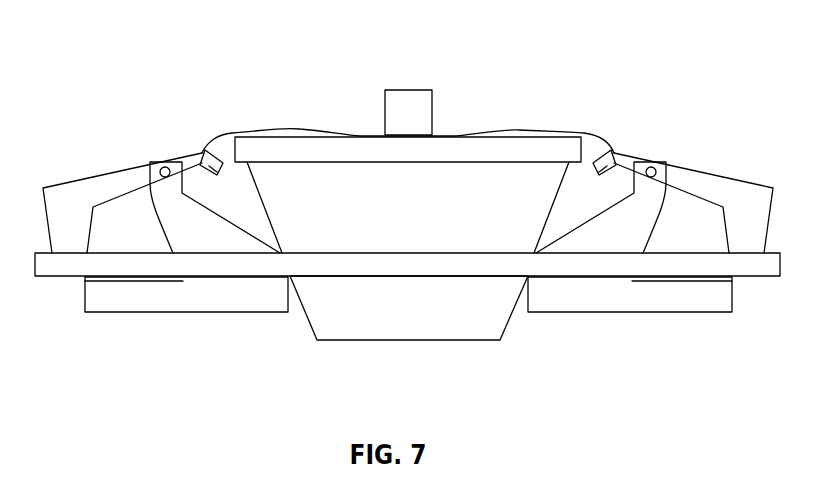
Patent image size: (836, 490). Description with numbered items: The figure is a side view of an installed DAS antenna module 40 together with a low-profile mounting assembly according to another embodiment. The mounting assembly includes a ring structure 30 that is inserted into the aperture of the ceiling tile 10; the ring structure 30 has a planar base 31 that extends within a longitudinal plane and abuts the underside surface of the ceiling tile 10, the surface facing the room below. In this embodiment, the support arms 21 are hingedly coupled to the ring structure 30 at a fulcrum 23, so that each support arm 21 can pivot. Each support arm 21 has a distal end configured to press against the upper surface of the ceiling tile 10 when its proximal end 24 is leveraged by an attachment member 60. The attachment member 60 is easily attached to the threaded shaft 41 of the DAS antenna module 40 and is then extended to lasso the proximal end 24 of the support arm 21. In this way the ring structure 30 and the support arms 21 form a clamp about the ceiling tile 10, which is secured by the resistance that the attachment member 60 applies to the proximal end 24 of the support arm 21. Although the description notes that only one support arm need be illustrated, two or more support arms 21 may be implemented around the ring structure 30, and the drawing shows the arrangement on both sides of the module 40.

The ceiling tile 10 is at (592, 278).
The support arm 21 is at (65, 183).
The fulcrum 23 is at (167, 162).
The proximal end 24 is at (217, 176).
The ring structure 30 is at (210, 300).
The planar base 31 is at (160, 220).
The DAS antenna module 40 is at (408, 342).
The threaded shaft 41 is at (413, 88).
The attachment member 60 is at (275, 130).